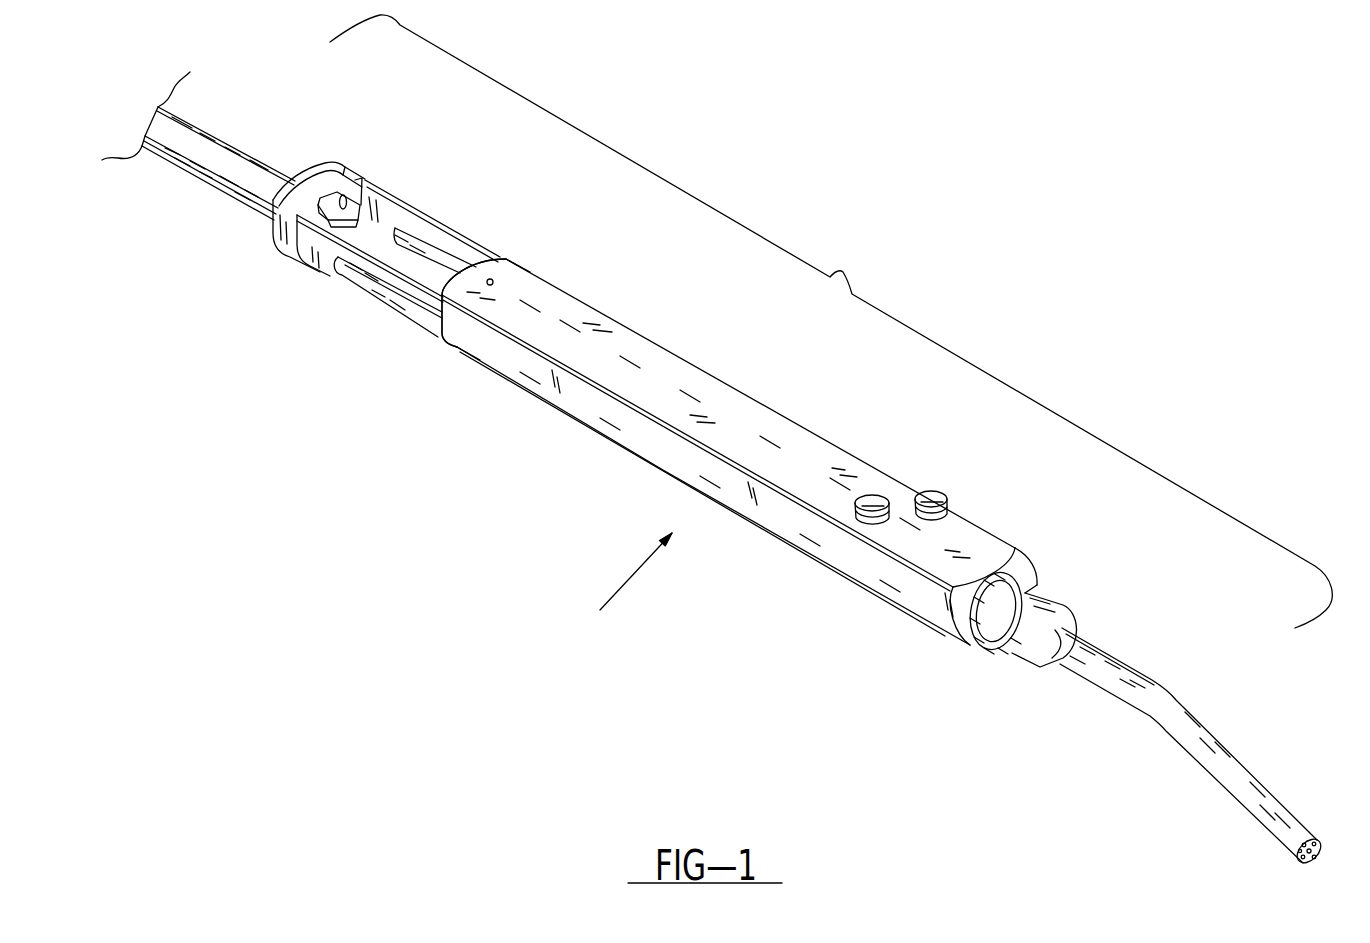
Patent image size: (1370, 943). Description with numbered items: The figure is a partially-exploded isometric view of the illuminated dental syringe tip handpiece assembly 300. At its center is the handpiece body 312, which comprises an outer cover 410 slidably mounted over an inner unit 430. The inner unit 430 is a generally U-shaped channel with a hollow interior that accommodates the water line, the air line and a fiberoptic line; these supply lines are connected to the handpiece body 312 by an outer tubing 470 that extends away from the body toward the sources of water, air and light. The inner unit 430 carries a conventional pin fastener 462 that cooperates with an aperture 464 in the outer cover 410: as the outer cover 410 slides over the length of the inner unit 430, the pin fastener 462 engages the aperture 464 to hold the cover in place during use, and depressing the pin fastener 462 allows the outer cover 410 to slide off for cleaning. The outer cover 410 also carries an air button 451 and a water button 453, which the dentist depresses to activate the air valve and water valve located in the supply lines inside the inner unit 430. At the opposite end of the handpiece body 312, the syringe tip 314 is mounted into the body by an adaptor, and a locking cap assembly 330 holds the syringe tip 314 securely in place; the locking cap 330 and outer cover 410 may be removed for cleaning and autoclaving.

The illuminated dental syringe tip handpiece assembly 300 is at (992, 202).
The handpiece body 312 is at (627, 571).
The syringe tip 314 is at (1177, 713).
The locking cap assembly 330 is at (1038, 637).
The outer cover 410 is at (655, 385).
The inner unit 430 is at (332, 258).
The air button 451 is at (866, 517).
The water button 453 is at (933, 494).
The pin fastener 462 is at (367, 183).
The aperture 464 is at (493, 280).
The outer tubing 470 is at (230, 167).